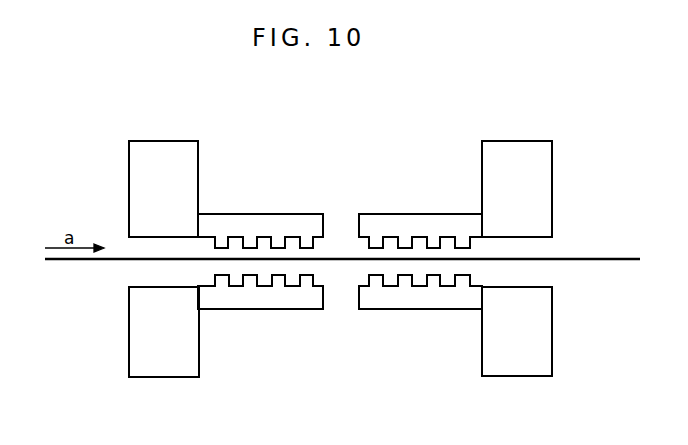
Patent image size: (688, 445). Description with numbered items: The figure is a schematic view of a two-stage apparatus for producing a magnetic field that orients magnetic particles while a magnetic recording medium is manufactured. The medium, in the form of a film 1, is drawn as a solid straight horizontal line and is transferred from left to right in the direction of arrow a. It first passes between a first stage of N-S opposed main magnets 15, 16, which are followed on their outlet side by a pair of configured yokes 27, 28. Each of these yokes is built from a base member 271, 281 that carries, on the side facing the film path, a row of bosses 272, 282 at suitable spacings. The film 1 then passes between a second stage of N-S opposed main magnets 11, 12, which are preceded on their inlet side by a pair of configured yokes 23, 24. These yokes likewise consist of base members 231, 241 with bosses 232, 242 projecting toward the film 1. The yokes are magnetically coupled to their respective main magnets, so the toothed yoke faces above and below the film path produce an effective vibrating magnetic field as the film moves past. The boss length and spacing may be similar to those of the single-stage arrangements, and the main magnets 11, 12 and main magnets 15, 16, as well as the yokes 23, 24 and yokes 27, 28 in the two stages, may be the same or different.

The film 1 is at (620, 253).
The main magnet 11 is at (543, 332).
The main magnet 12 is at (540, 180).
The main magnet 15 is at (133, 350).
The main magnet 16 is at (133, 193).
The yoke 23 is at (407, 323).
The base member 231 is at (453, 300).
The boss 232 is at (375, 280).
The yoke 24 is at (422, 177).
The base member 241 is at (455, 223).
The boss 242 is at (380, 247).
The yoke 27 is at (257, 335).
The base member 271 is at (220, 298).
The boss 272 is at (280, 278).
The yoke 28 is at (262, 203).
The base member 281 is at (230, 220).
The boss 282 is at (308, 240).